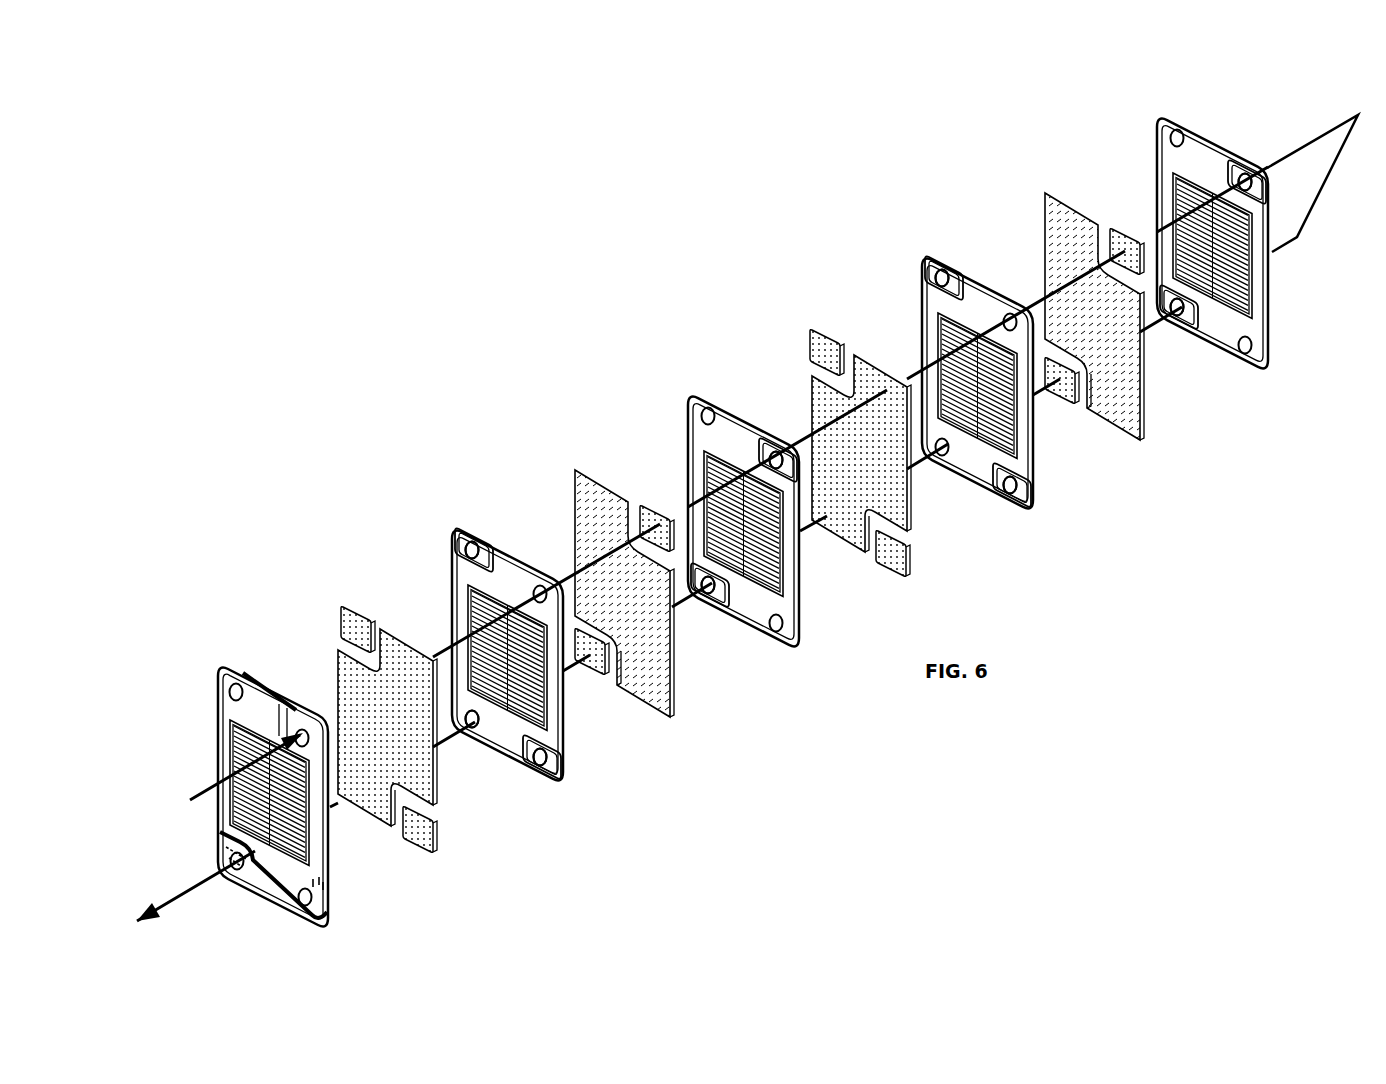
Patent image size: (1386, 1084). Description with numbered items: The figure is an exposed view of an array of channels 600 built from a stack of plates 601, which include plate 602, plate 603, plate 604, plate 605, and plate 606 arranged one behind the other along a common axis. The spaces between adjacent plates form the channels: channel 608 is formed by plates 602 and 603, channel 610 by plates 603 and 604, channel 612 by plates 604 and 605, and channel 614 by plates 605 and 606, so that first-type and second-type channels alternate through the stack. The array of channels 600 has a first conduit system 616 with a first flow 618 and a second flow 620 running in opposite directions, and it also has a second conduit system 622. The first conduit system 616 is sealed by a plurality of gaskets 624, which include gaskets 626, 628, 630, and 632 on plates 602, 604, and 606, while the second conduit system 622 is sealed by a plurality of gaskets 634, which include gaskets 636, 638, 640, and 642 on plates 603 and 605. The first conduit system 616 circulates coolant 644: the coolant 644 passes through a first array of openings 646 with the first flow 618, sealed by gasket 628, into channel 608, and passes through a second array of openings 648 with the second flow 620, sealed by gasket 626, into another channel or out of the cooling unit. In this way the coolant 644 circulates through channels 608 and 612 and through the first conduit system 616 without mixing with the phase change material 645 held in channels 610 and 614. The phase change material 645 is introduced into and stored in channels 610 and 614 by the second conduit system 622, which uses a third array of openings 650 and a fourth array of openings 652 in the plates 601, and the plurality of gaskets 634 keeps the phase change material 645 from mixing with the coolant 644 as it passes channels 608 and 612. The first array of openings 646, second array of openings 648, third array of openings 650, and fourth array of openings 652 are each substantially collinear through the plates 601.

The array of channels 600 is at (747, 526).
The plates 601 is at (1178, 215).
The plate 602 is at (265, 769).
The plate 603 is at (471, 678).
The plate 604 is at (709, 513).
The plate 605 is at (939, 387).
The plate 606 is at (1178, 237).
The channel 608 is at (418, 737).
The channel 610 is at (629, 587).
The channel 612 is at (862, 364).
The channel 614 is at (1045, 222).
The first conduit system 616 is at (232, 876).
The first flow 618 is at (230, 800).
The second flow 620 is at (228, 862).
The second conduit system 622 is at (316, 898).
The plurality of gaskets 624 is at (213, 829).
The gasket 626 is at (262, 896).
The gasket 628 is at (267, 703).
The gasket 630 is at (751, 433).
The gasket 632 is at (1217, 158).
The plurality of gaskets 634 is at (519, 785).
The gasket 636 is at (503, 758).
The gasket 638 is at (497, 559).
The gasket 640 is at (992, 492).
The gasket 642 is at (963, 281).
The coolant 644 is at (443, 795).
The phase change material 645 is at (678, 684).
The first array of openings 646 is at (302, 716).
The second array of openings 648 is at (228, 855).
The third array of openings 650 is at (312, 882).
The fourth array of openings 652 is at (238, 678).